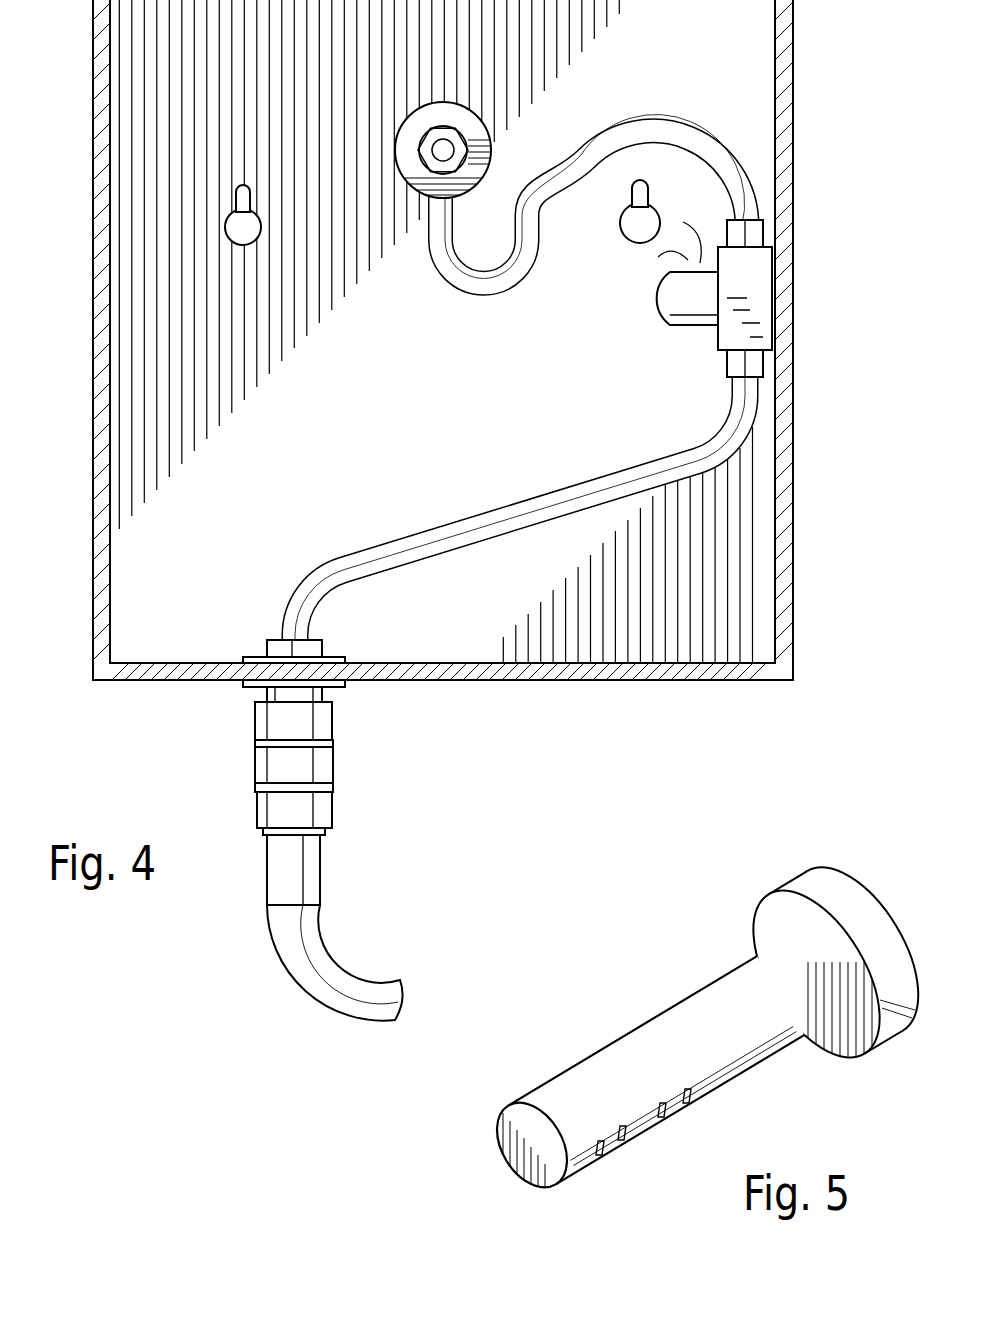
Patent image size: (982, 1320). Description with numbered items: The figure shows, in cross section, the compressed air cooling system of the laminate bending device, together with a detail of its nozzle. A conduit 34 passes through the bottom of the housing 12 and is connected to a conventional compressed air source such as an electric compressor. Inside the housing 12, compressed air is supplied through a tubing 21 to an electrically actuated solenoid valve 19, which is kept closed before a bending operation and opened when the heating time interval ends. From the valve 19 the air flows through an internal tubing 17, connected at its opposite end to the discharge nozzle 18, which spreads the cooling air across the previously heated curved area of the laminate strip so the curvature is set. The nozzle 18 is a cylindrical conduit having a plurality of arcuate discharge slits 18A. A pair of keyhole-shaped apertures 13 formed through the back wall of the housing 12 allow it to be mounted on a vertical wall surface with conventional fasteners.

In FIG. 4, the housing 12 is at (94, 90).
In FIG. 4, the keyhole-shaped apertures 13 is at (637, 230).
In FIG. 4, the internal tubing 17 is at (487, 287).
In FIG. 4, the discharge nozzle 18 is at (477, 140).
In FIG. 5, the discharge nozzle 18 is at (708, 1008).
In FIG. 5, the arcuate discharge slits 18A is at (687, 1105).
In FIG. 4, the solenoid valve 19 is at (692, 327).
In FIG. 4, the tubing 21 is at (437, 526).
In FIG. 4, the conduit 34 is at (260, 810).